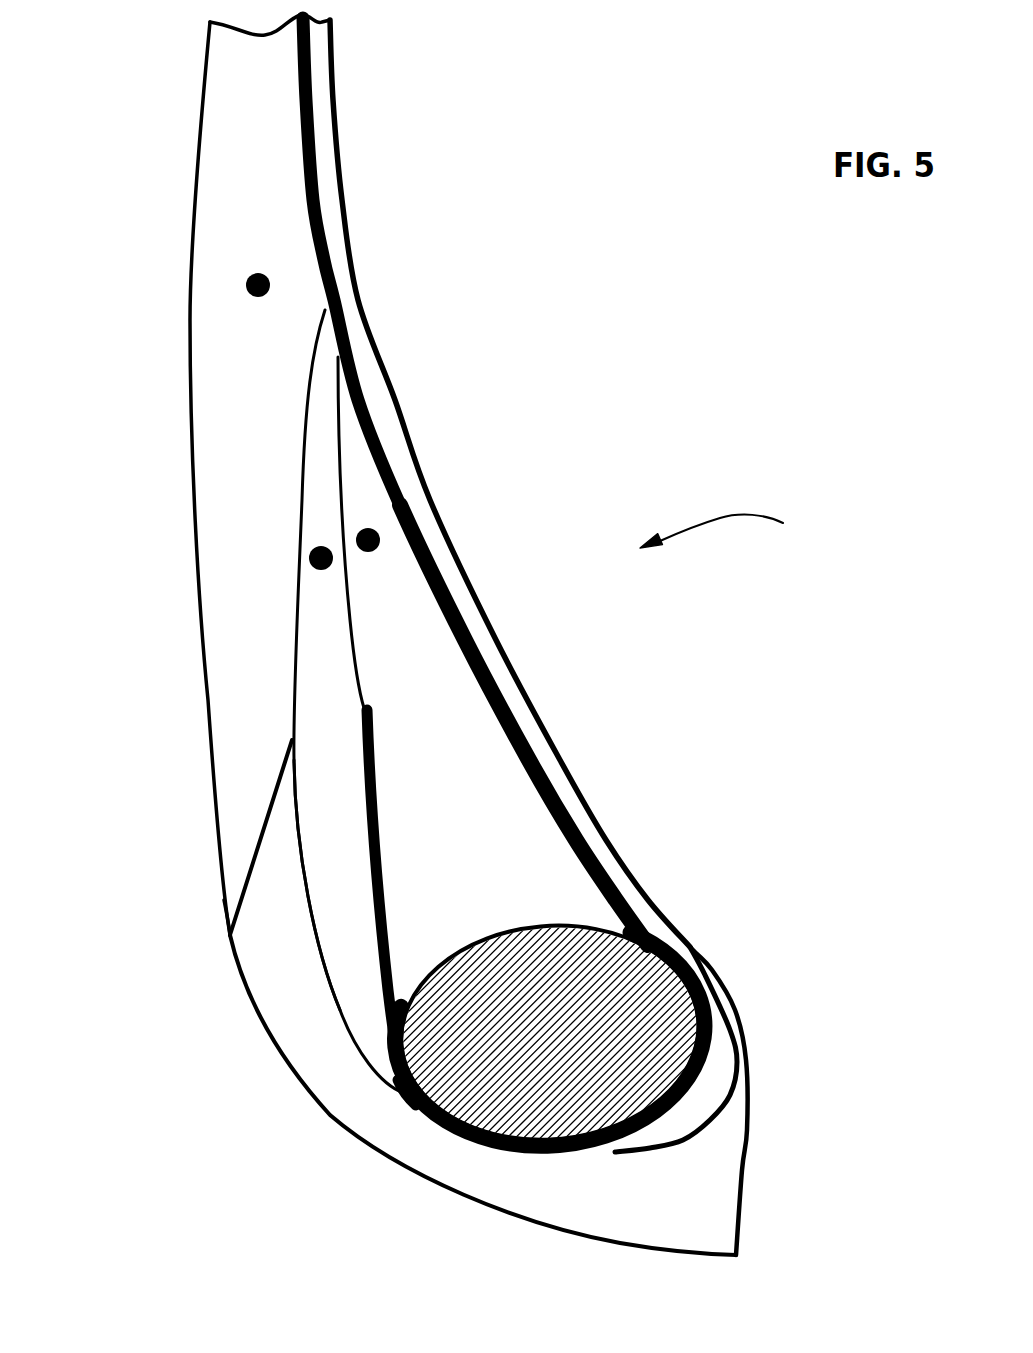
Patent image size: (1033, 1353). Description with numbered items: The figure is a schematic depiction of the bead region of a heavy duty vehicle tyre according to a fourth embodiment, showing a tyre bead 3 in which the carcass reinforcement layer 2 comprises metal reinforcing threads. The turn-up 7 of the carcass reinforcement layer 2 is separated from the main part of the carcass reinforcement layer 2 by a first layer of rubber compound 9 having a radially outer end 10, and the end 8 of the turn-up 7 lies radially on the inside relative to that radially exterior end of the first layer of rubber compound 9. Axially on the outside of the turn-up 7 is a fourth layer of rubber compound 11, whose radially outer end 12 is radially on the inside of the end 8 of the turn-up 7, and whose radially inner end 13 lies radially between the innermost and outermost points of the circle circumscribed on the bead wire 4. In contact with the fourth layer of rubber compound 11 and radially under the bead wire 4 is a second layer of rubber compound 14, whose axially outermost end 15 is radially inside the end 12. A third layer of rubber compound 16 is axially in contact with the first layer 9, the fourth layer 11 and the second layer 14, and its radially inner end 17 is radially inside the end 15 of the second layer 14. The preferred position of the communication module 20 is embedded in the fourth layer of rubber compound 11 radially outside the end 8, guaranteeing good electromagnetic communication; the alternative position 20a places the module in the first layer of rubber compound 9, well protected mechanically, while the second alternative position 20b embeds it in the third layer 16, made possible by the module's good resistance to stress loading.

The carcass reinforcement layer 2 is at (333, 268).
The tyre bead 3 is at (725, 524).
The core insert 4 is at (583, 1023).
The turn-up 7 is at (367, 850).
The end of the turn-up 8 is at (368, 708).
The first layer of rubber compound 9 is at (483, 863).
The radially outer end of the first layer of rubber compound 10 is at (342, 379).
The fourth layer of rubber compound 11 is at (325, 658).
The radially outer end of the fourth layer of rubber compound 12 is at (345, 318).
The radially inner end of the fourth layer of rubber compound 13 is at (397, 1095).
The second layer of rubber compound 14 is at (527, 1185).
The axially outermost end of the second layer of rubber compound 15 is at (287, 743).
The third layer of rubber compound 16 is at (225, 240).
The radially inner end of the third layer of rubber compound 17 is at (224, 927).
The communication module 20 is at (307, 563).
The alternative position for the communication module 20a is at (372, 534).
The second alternative position for the communication module 20b is at (246, 288).